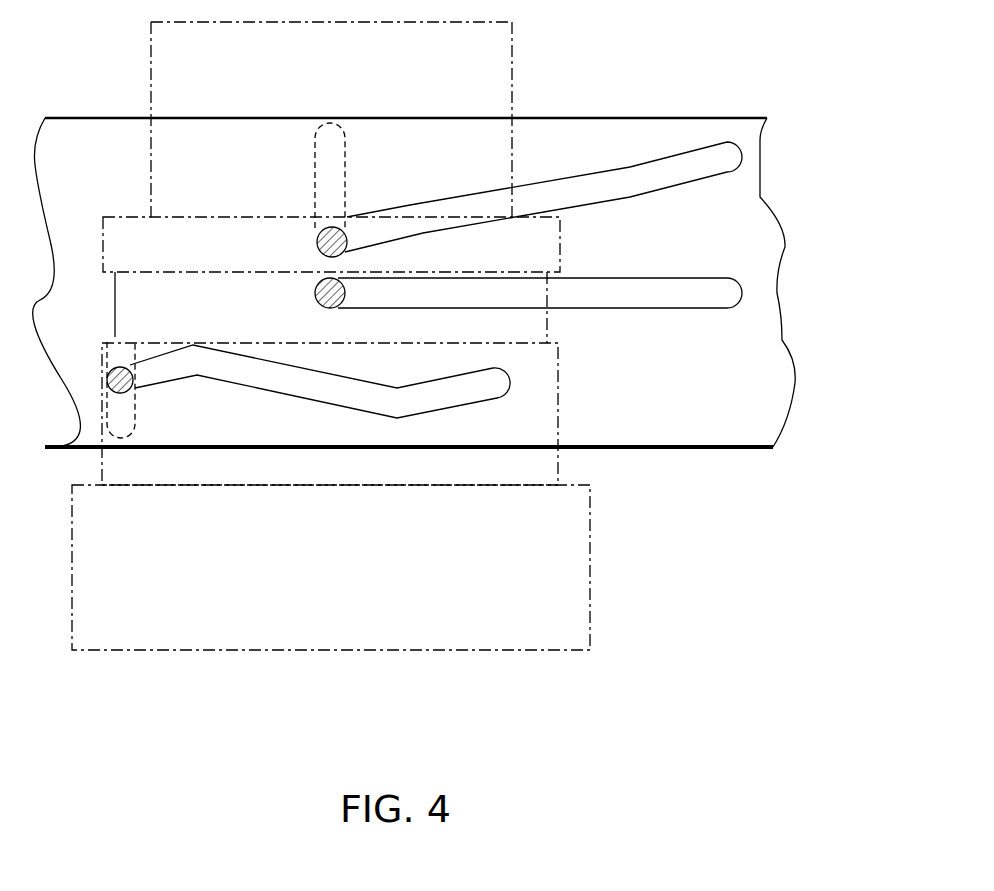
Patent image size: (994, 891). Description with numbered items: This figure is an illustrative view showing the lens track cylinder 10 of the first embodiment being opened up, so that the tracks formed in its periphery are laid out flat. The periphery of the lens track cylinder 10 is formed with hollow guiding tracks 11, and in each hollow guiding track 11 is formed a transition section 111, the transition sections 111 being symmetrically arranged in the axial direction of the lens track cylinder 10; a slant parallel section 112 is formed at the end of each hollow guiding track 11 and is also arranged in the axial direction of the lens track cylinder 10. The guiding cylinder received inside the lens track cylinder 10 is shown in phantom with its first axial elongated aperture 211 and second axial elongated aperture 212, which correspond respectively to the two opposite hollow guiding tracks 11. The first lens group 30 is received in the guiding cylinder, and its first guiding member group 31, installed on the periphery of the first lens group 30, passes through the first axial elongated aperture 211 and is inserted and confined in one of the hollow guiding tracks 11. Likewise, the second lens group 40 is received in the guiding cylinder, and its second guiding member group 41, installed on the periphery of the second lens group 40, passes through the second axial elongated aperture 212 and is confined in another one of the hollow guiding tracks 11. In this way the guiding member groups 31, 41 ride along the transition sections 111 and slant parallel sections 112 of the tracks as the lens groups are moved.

The lens track cylinder 10 is at (710, 415).
The hollow guiding track 11 is at (565, 170).
The transition section 111 is at (522, 203).
The slant parallel section 112 is at (395, 207).
The first lens group 30 is at (583, 575).
The first guiding member group 31 is at (108, 390).
The second lens group 40 is at (158, 87).
The second guiding member group 41 is at (323, 230).
The first axial elongated aperture 211 is at (130, 443).
The second axial elongated aperture 212 is at (315, 150).